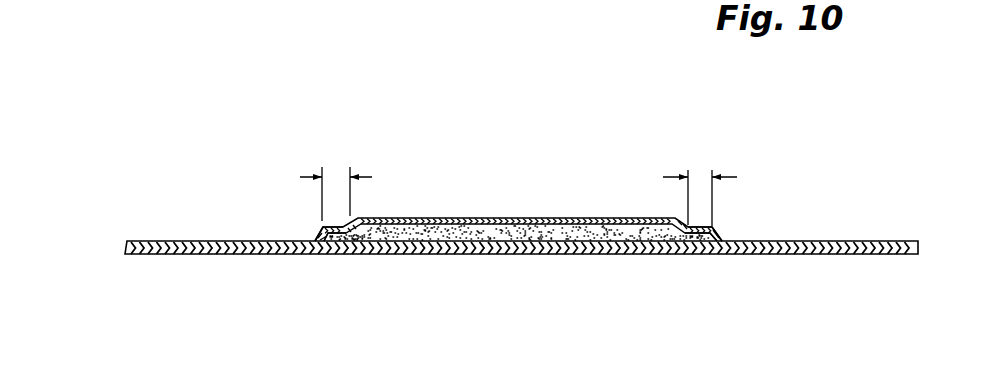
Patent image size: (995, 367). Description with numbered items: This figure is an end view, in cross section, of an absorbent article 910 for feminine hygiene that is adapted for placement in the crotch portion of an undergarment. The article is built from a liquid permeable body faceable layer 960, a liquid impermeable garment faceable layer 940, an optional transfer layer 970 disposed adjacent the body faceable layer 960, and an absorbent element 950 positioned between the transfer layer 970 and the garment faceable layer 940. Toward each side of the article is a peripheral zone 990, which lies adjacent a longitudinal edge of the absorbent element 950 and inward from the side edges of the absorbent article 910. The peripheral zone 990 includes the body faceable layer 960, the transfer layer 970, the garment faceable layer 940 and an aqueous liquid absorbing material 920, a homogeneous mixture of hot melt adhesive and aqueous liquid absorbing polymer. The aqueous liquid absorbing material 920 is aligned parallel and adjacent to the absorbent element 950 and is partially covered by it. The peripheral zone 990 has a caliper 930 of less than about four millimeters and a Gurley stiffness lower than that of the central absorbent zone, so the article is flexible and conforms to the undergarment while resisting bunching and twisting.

The absorbent article 910 is at (238, 132).
The aqueous liquid absorbing material 920 is at (341, 243).
The caliper 930 is at (313, 227).
The garment faceable layer 940 is at (712, 254).
The absorbent element 950 is at (436, 235).
The body faceable layer 960 is at (493, 217).
The transfer layer 970 is at (435, 217).
The peripheral zone 990 is at (333, 170).